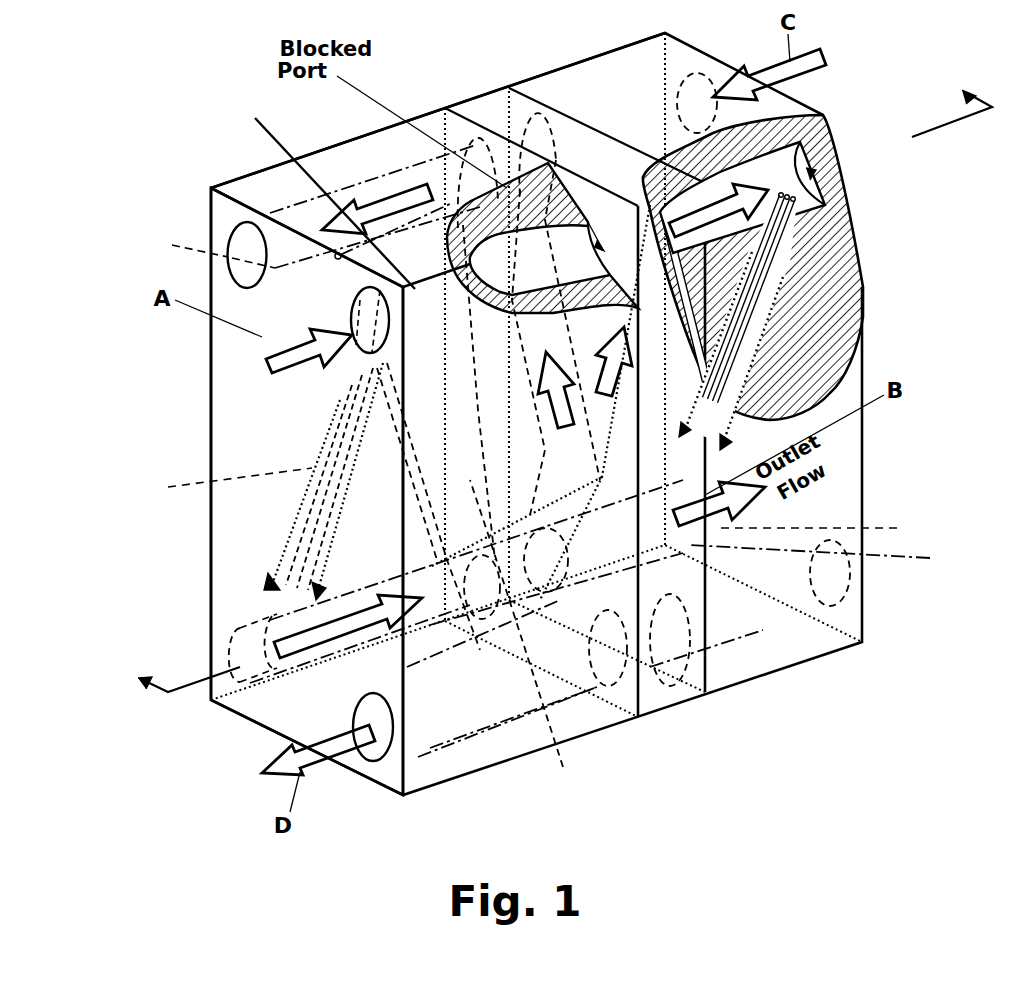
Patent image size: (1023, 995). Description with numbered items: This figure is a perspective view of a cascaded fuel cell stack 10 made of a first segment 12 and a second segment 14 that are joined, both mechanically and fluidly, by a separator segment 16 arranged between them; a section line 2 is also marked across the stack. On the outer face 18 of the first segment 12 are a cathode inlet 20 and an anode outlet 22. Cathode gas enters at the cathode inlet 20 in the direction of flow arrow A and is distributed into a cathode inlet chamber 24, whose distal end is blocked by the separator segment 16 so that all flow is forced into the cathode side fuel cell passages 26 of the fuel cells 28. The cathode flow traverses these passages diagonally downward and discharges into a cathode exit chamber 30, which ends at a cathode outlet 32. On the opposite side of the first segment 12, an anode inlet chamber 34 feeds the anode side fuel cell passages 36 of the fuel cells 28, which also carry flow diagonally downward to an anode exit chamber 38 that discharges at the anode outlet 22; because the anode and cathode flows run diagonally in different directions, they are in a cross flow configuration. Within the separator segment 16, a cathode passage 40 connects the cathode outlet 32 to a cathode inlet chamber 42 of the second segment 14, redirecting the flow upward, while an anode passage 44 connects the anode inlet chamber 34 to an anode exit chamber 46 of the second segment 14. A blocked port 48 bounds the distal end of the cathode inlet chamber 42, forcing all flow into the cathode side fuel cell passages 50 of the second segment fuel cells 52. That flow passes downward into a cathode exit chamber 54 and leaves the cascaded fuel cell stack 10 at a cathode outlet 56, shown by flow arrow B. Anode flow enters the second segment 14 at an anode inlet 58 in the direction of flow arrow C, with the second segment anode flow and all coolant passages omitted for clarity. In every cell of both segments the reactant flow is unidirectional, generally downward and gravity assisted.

The section line 2- 2 is at (557, 385).
The cascaded fuel cell stack 10 is at (220, 156).
The first segment 12 is at (262, 192).
The second segment 14 is at (605, 88).
The separator segment 16 is at (493, 120).
The outer face 18 is at (238, 601).
The cathode inlet 20 is at (350, 312).
The anode outlet 22 is at (378, 754).
The cathode inlet chamber 24 is at (433, 205).
The cathode side fuel cell passages 26 is at (410, 544).
The fuel cells 28 is at (350, 387).
The cathode exit chamber 30 is at (282, 685).
The cathode outlet 32 is at (480, 581).
The anode inlet chamber 34 is at (387, 173).
The anode side fuel cell passages 36 is at (206, 255).
The anode exit chamber 38 is at (482, 732).
The cathode passage 40 is at (542, 510).
The cathode inlet chamber 42 is at (770, 185).
The anode passage 44 is at (660, 680).
The anode exit chamber 46 is at (786, 636).
The blocked port 48 is at (812, 172).
The cathode side fuel cell passages 50 is at (780, 320).
The second segment fuel cells 52 is at (787, 259).
The cathode exit chamber 54 is at (833, 573).
The cathode outlet 56 is at (826, 528).
The anode inlet 58 is at (706, 76).